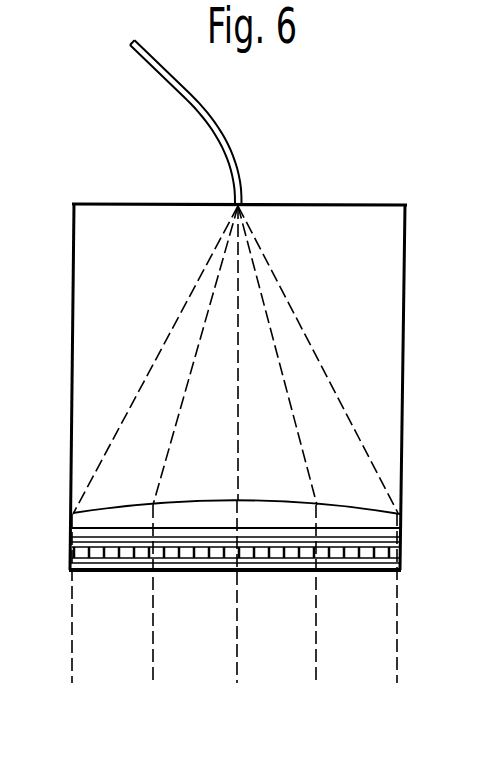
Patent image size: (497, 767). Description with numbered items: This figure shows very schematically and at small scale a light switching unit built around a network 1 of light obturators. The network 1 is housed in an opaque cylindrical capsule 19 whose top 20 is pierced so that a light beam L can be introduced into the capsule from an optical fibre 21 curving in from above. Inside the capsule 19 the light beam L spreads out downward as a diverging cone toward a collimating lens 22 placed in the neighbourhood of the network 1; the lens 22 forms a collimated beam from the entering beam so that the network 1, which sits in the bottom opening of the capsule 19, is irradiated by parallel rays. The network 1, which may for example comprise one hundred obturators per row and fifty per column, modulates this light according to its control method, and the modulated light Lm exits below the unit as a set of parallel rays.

The network 1 is at (365, 568).
The opaque cylindrical capsule 19 is at (331, 202).
The top of the capsule 20 is at (393, 204).
The optical fibre 21 is at (212, 113).
The collimating lens 22 is at (352, 522).
The light beam L is at (333, 355).
The modulated light Lm is at (252, 669).